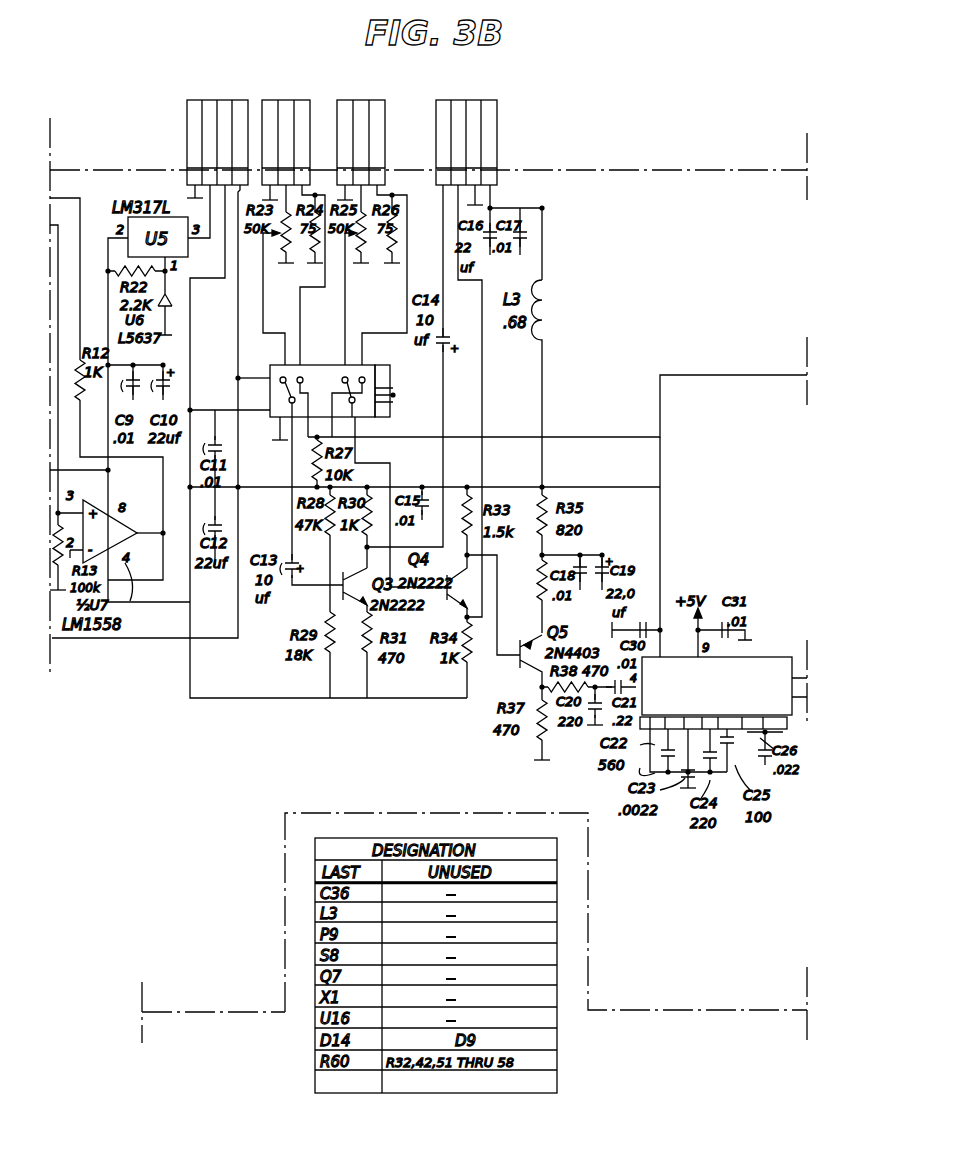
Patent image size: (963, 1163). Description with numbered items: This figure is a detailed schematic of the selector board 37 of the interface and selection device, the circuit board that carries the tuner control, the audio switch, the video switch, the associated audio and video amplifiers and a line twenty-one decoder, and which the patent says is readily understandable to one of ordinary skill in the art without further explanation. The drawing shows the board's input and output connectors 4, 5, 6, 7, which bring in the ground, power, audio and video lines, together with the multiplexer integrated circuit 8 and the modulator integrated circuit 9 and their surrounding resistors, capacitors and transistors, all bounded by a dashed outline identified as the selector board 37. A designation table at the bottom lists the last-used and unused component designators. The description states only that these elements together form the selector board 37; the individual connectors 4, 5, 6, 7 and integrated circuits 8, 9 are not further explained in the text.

The selector board 37 is at (668, 168).
The connector P4 4 is at (199, 144).
The connector P5 5 is at (276, 152).
The connector P6 6 is at (347, 144).
The connector P7 7 is at (451, 144).
The multiplexer U8 8 is at (342, 439).
The modulator U9 9 is at (723, 693).